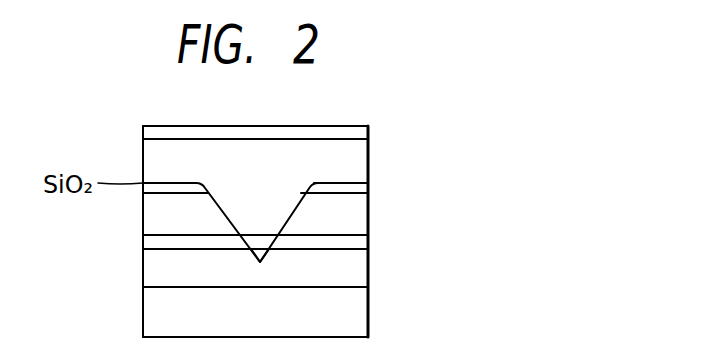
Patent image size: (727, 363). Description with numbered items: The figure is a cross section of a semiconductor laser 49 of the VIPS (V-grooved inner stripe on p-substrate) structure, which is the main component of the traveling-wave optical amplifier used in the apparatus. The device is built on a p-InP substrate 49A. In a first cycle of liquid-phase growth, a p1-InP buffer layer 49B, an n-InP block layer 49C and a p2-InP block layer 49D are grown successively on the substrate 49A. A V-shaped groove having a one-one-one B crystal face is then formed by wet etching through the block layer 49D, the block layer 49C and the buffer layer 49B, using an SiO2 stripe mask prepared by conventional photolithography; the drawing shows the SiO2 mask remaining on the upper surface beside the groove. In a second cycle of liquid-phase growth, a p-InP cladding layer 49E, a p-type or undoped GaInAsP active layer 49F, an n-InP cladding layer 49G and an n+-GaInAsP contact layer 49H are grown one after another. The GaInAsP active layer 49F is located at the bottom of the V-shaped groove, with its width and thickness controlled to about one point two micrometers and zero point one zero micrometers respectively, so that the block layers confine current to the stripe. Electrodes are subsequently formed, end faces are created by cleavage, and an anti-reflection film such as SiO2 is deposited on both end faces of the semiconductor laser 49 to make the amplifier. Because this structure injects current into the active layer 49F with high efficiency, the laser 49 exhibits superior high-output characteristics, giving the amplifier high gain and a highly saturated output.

The semiconductor laser 49 is at (125, 132).
The p-InP substrate 49A is at (358, 308).
The p1-InP buffer layer 49B is at (358, 266).
The n-InP block layer 49C is at (358, 242).
The p2-InP block layer 49D is at (267, 230).
The p-InP cladding layer 49E is at (262, 248).
The GaInAsP active layer 49F is at (357, 200).
The n-InP cladding layer 49G is at (357, 158).
The n+-GaInAsP contact layer 49H is at (368, 128).